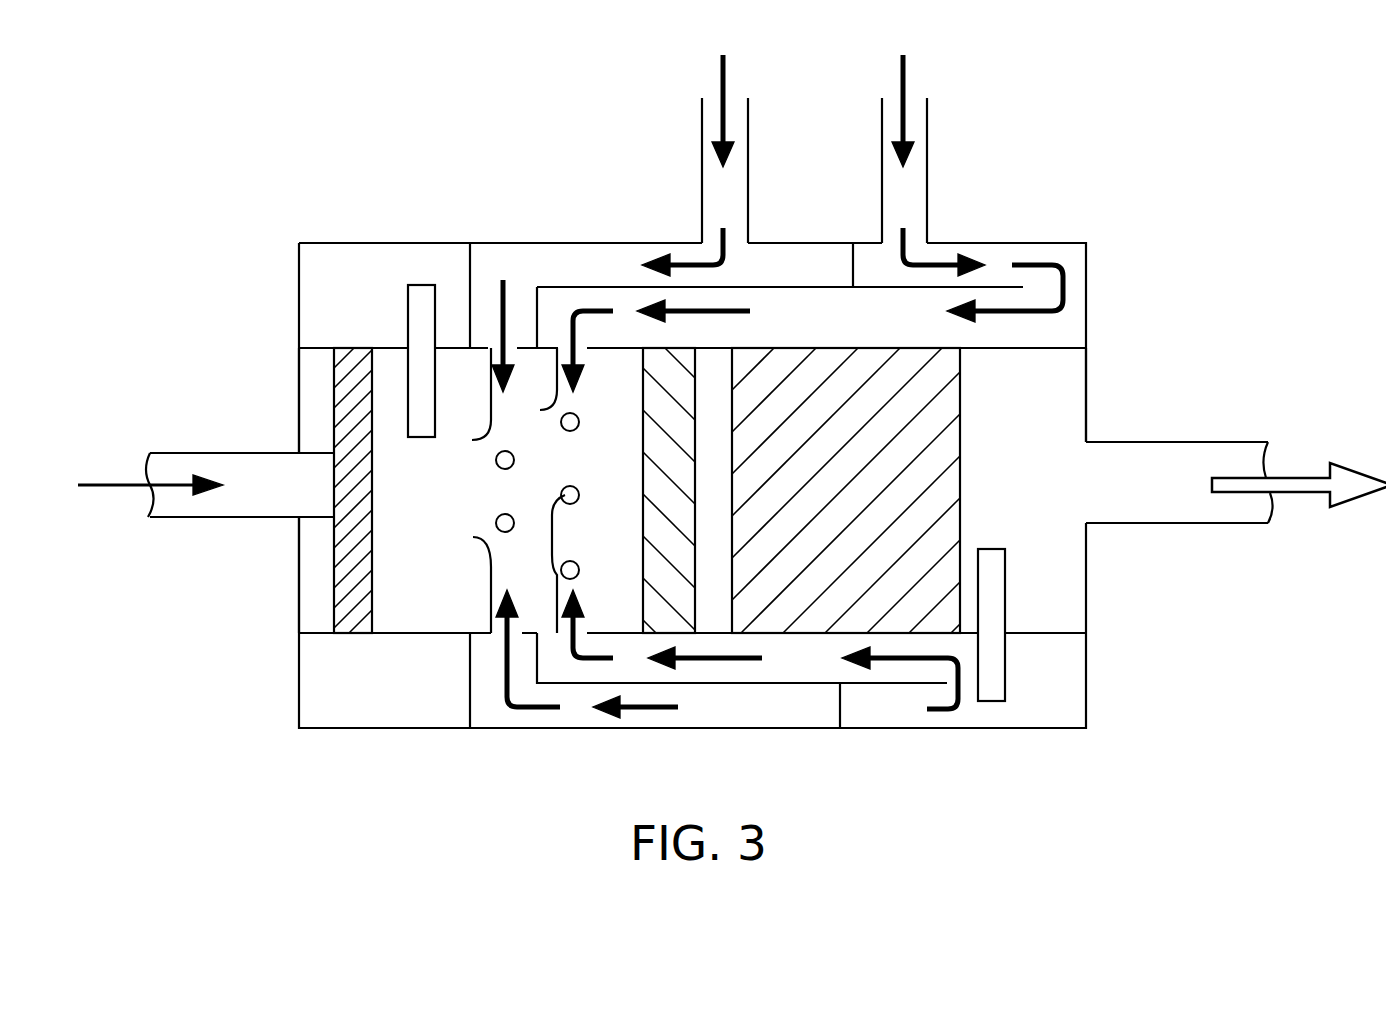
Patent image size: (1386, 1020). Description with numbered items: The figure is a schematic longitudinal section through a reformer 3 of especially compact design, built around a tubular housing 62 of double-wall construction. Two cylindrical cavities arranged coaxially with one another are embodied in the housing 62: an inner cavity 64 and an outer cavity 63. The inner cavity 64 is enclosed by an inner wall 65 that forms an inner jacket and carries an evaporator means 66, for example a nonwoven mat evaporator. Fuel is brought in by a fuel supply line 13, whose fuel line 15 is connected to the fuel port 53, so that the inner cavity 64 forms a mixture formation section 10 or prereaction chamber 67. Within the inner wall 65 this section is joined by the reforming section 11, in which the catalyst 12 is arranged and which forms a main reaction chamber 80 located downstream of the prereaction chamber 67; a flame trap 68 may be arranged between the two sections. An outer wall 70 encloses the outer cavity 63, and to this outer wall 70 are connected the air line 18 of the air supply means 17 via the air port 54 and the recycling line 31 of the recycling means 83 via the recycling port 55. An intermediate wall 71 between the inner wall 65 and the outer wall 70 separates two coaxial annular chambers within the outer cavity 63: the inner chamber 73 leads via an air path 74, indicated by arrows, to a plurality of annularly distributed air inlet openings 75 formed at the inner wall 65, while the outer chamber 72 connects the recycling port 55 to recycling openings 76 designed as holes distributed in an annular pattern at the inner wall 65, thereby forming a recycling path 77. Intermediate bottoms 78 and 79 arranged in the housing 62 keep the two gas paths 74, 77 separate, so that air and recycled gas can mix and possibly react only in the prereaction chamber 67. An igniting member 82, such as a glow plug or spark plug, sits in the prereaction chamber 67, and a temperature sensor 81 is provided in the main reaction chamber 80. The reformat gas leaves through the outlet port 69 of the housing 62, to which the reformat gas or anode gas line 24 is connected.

The reformer 3 is at (383, 780).
The mixture formation section 10 is at (428, 595).
The reforming section 11 is at (1066, 389).
The catalyst 12 is at (950, 430).
The fuel supply line 13 is at (208, 532).
The fuel line 15 is at (250, 452).
The air supply means 17 is at (942, 130).
The air line 18 is at (929, 173).
The reformat gas line 24 is at (1226, 527).
The recycling line 31 is at (702, 152).
The fuel port 53 is at (297, 519).
The air port 54 is at (932, 242).
The recycling port 55 is at (752, 242).
The housing 62 is at (342, 228).
The outer cavity 63 is at (413, 258).
The inner cavity 64 is at (525, 502).
The inner wall 65 is at (388, 633).
The evaporator means 66 is at (362, 508).
The prereaction chamber 67 is at (623, 590).
The flame trap 68 is at (660, 450).
The outlet port 69 is at (1088, 527).
The outer wall 70 is at (520, 242).
The intermediate wall 71 is at (760, 683).
The outer chamber 72 is at (575, 718).
The inner chamber 73 is at (830, 680).
The air path 74 is at (1068, 290).
The air inlet openings 75 is at (562, 418).
The recycling openings 76 is at (497, 456).
The recycling path 77 is at (726, 263).
The intermediate bottom 78 is at (470, 678).
The intermediate bottom 79 is at (843, 705).
The main reaction chamber 80 is at (980, 499).
The temperature sensor 81 is at (1006, 573).
The igniting member 82 is at (402, 420).
The recycling means 83 is at (702, 102).